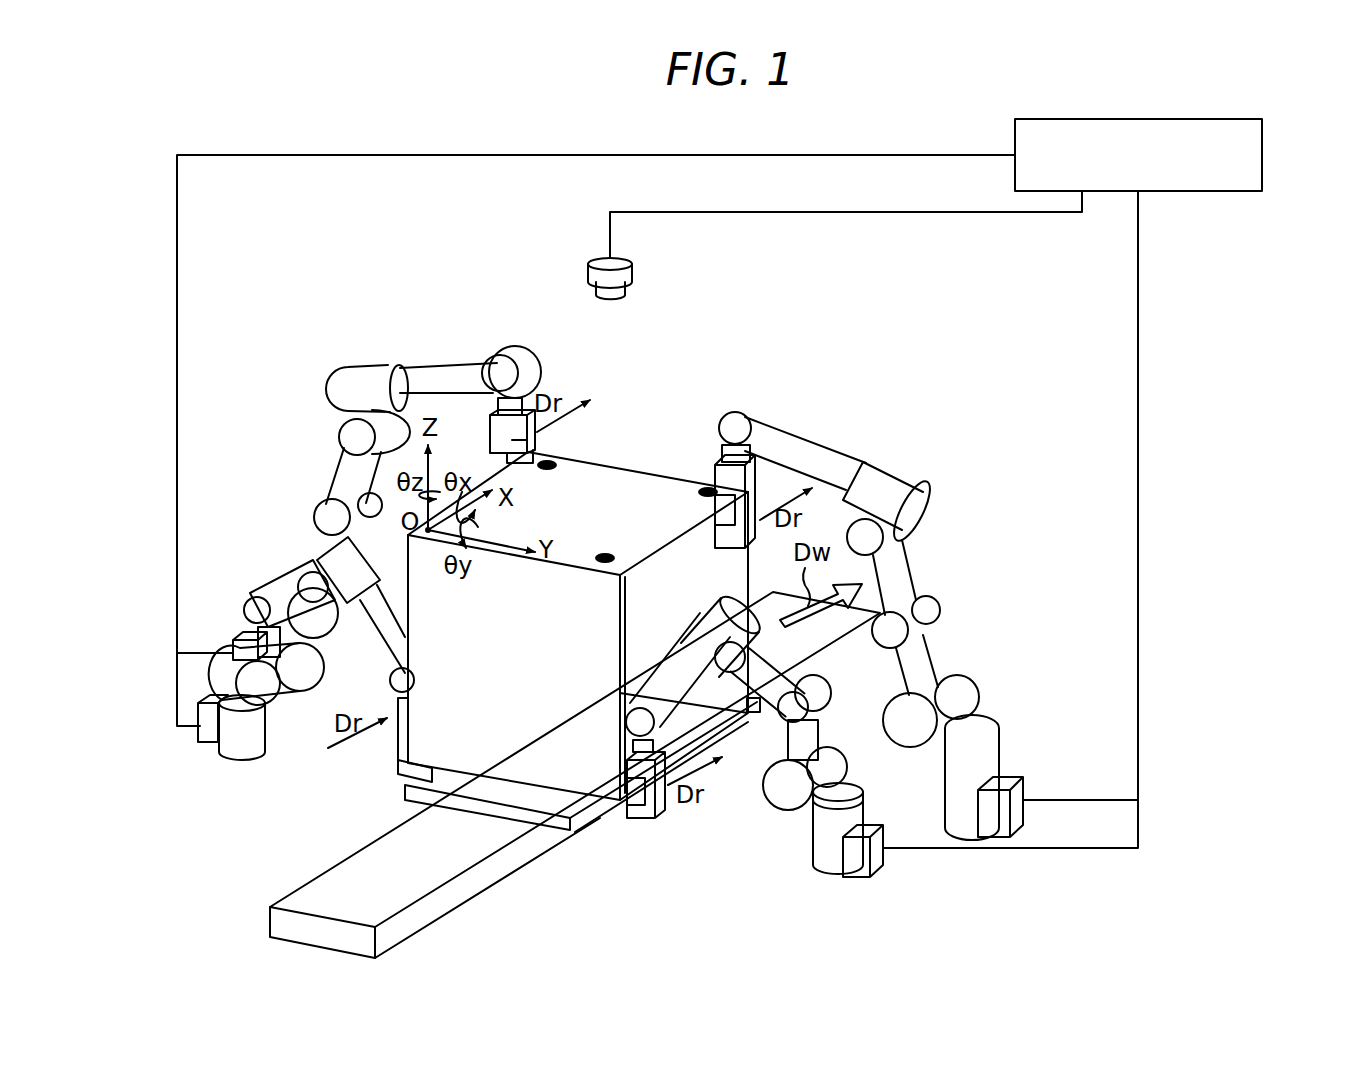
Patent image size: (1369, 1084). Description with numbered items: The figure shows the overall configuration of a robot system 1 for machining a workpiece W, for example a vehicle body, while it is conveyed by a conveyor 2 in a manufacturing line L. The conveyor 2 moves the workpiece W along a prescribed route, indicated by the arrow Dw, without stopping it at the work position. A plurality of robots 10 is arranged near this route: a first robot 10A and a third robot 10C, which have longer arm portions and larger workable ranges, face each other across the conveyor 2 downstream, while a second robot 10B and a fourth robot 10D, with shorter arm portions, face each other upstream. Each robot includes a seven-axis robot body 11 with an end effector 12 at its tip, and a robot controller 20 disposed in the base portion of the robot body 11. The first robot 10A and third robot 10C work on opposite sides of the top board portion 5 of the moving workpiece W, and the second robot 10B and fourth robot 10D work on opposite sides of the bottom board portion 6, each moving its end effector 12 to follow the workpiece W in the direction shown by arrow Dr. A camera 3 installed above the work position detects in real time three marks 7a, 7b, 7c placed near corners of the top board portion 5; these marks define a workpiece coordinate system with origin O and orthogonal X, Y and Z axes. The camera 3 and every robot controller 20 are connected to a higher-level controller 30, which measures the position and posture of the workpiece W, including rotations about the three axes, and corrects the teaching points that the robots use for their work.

The robot system 1 is at (122, 188).
The conveyor 2 is at (564, 777).
The camera 3 is at (632, 280).
The top board portion 5 is at (632, 500).
The bottom board portion 6 is at (702, 724).
The mark 7a is at (553, 468).
The mark 7b is at (706, 489).
The mark 7c is at (600, 560).
The robot 10 is at (616, 638).
The first robot 10A is at (616, 658).
The second robot 10B is at (776, 812).
The third robot 10C is at (362, 366).
The fourth robot 10D is at (284, 565).
The robot body 11 is at (905, 555).
The end effector 12 is at (500, 440).
The robot controller 20 is at (1010, 778).
The higher-level controller 30 is at (1262, 158).
The workpiece W is at (578, 589).
The manufacturing line L is at (332, 858).